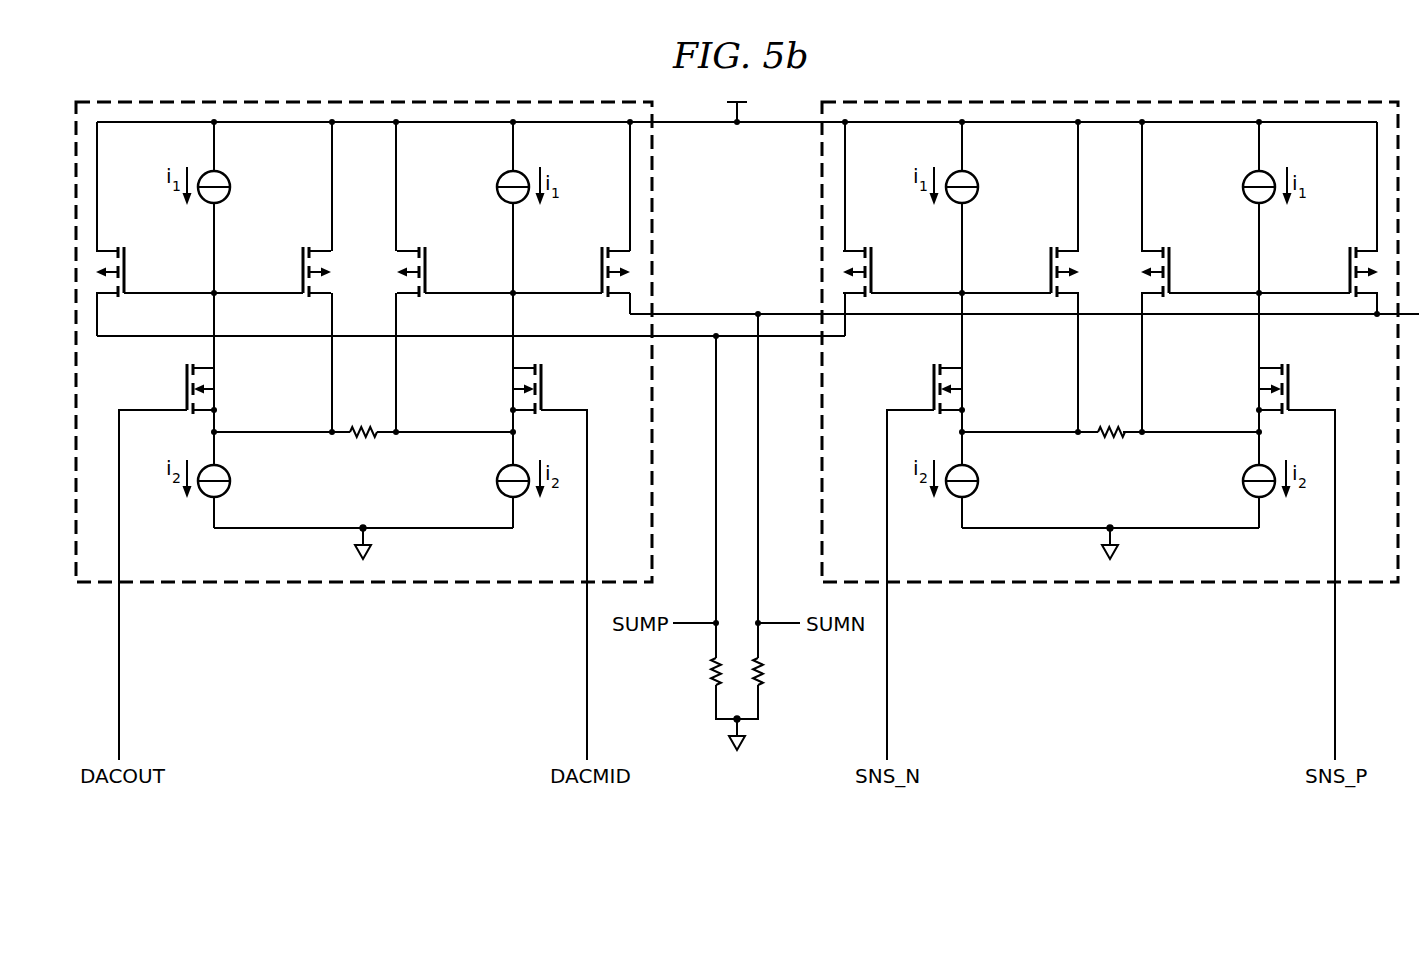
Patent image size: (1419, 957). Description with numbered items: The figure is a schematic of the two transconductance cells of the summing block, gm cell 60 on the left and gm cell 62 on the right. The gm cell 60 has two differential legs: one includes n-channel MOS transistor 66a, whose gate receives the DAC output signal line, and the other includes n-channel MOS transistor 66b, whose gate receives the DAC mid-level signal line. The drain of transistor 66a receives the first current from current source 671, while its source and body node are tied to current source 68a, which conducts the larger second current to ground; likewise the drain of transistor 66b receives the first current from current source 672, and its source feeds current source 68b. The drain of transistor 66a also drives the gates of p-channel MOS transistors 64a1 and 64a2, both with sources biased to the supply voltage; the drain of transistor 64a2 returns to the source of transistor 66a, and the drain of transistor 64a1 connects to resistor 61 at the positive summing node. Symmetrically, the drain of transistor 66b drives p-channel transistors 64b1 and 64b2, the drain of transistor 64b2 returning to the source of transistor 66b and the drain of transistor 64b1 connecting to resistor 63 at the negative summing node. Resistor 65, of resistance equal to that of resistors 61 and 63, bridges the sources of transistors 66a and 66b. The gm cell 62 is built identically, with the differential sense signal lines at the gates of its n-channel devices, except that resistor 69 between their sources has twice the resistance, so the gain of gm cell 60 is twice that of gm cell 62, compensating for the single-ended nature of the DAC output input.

The gm cell 60 is at (283, 102).
The gm cell 62 is at (1190, 102).
The current source 671 is at (229, 179).
The current source 672 is at (498, 180).
The p-channel MOS transistor 64a1 is at (127, 263).
The p-channel MOS transistor 64a2 is at (302, 260).
The p-channel MOS transistor 64b1 is at (601, 260).
The p-channel MOS transistor 64b2 is at (426, 262).
The n-channel MOS transistor 66a is at (187, 380).
The n-channel MOS transistor 66b is at (541, 380).
The current source 68a is at (229, 490).
The current source 68b is at (498, 490).
The resistor 65 is at (360, 441).
The resistor 69 is at (1110, 437).
The resistor 61 is at (708, 670).
The resistor 63 is at (766, 670).